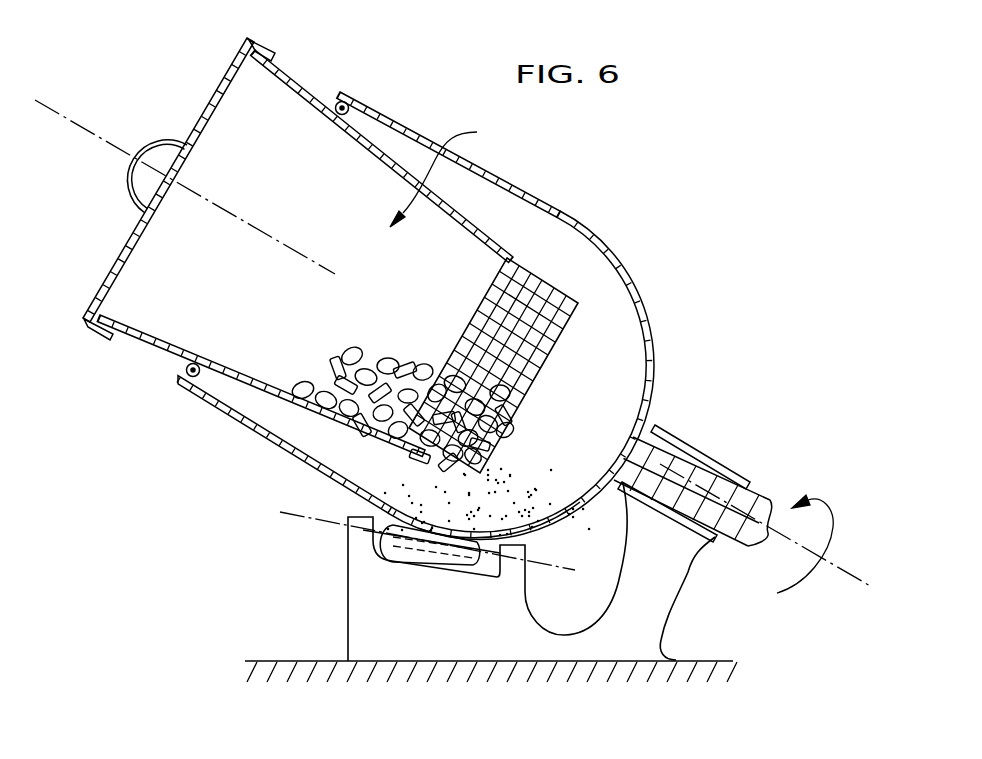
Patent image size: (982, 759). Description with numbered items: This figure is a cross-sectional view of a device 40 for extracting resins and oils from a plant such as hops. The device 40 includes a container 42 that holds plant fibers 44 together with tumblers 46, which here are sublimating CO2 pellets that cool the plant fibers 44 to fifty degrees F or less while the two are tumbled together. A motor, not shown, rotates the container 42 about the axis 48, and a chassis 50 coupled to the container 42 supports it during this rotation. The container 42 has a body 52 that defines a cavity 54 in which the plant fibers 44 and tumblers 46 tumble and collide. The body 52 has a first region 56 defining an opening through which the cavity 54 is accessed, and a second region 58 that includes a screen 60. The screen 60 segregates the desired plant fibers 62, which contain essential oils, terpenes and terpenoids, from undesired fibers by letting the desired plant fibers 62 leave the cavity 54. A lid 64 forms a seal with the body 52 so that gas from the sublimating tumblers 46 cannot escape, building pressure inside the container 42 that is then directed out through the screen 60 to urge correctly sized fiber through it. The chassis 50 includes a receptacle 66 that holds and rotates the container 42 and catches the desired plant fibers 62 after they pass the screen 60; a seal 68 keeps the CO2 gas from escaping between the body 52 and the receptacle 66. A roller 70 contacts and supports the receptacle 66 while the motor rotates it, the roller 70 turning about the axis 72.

The device 40 is at (427, 281).
The container 42 is at (315, 98).
The plant fibers 44 is at (380, 360).
The tumbler 46 is at (337, 367).
The axis 48 is at (85, 129).
The chassis 50 is at (314, 574).
The body 52 is at (132, 337).
The cavity 54 is at (444, 173).
The first region 56 is at (284, 61).
The second region 58 is at (505, 250).
The screen 60 is at (540, 270).
The desired plant fibers 62 is at (535, 528).
The lid 64 is at (218, 87).
The receptacle 66 is at (632, 270).
The seal 68 is at (350, 117).
The roller 70 is at (390, 548).
The axis 72 is at (282, 515).